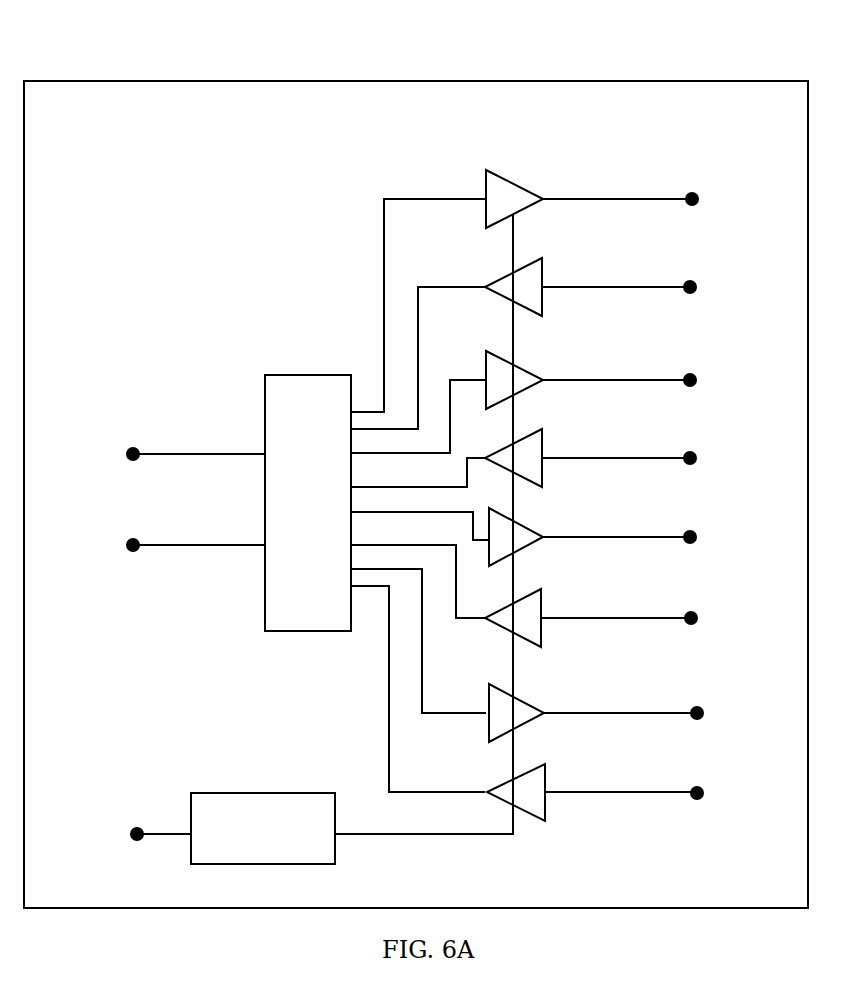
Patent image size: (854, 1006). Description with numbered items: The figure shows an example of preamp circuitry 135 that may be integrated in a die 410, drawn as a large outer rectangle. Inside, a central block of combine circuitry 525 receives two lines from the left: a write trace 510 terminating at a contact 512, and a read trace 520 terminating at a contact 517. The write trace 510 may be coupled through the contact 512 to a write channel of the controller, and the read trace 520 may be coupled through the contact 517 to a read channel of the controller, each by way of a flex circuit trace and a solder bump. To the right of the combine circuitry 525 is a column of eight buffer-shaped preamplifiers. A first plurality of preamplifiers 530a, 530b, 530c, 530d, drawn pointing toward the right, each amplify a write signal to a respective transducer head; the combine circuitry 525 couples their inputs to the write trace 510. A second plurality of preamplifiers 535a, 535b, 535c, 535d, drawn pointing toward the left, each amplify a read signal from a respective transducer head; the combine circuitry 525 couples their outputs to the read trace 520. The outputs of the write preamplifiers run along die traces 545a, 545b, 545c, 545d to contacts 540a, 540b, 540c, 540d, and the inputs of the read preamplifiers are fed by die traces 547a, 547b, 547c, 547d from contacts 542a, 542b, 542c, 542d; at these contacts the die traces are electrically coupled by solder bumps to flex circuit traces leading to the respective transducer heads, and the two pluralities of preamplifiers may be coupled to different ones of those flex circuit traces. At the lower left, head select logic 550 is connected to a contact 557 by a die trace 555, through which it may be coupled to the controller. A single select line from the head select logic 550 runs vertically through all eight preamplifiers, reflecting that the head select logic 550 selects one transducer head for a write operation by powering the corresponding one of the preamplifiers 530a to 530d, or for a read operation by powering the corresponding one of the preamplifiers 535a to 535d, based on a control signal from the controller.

The die 410 is at (486, 73).
The preamp circuitry 135 is at (228, 155).
The combine circuitry 525 is at (289, 372).
The write trace 510 is at (175, 447).
The contact 512 is at (133, 447).
The read trace 520 is at (178, 538).
The contact 517 is at (136, 538).
The head select logic 550 is at (277, 790).
The die trace 555 is at (163, 841).
The contact 557 is at (134, 826).
The preamplifier 530a is at (528, 192).
The preamplifier 530b is at (530, 368).
The preamplifier 530c is at (540, 523).
The preamplifier 530d is at (545, 702).
The preamplifier 535a is at (486, 277).
The preamplifier 535b is at (488, 452).
The preamplifier 535c is at (486, 612).
The preamplifier 535d is at (485, 786).
The die trace 545a is at (621, 196).
The die trace 545b is at (622, 376).
The die trace 545c is at (626, 531).
The die trace 545d is at (623, 707).
The contact 540a is at (693, 191).
The contact 540b is at (691, 373).
The contact 540c is at (692, 530).
The contact 540d is at (694, 704).
The die trace 547a is at (628, 284).
The die trace 547b is at (621, 450).
The die trace 547c is at (627, 614).
The die trace 547d is at (628, 788).
The contact 542a is at (690, 279).
The contact 542b is at (690, 450).
The contact 542c is at (692, 611).
The contact 542d is at (694, 786).